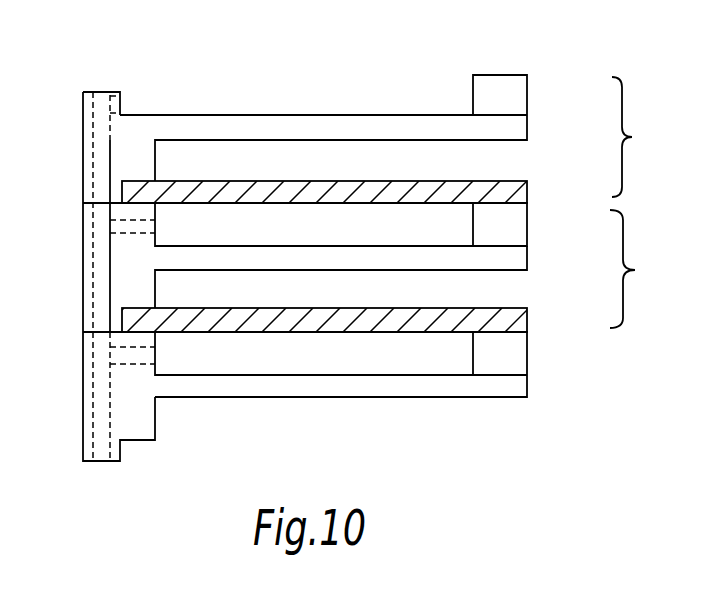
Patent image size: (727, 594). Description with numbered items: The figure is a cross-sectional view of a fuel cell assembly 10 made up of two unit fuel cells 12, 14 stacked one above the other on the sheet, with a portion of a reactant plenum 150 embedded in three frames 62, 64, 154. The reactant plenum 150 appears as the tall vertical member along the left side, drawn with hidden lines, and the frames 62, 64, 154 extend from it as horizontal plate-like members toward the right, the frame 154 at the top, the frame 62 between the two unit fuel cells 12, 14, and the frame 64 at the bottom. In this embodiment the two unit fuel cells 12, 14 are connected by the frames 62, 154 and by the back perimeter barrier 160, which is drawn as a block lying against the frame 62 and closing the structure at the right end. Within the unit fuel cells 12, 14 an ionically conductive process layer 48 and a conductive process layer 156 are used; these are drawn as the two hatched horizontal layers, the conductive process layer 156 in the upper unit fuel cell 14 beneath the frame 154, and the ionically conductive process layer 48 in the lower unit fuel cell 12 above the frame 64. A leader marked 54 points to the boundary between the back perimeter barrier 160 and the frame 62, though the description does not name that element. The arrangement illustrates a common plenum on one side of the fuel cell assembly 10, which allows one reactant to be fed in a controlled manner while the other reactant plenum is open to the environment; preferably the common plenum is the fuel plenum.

The fuel cell assembly 10 is at (113, 36).
The unit fuel cell 12 is at (637, 269).
The unit fuel cell 14 is at (638, 137).
The ionically conductive process layer 48 is at (528, 320).
The interface 54 is at (320, 232).
The frame 62 is at (435, 258).
The frame 64 is at (528, 386).
The reactant plenum 150 is at (103, 461).
The frame 154 is at (528, 127).
The conductive process layer 156 is at (528, 190).
The back perimeter barrier 160 is at (528, 232).